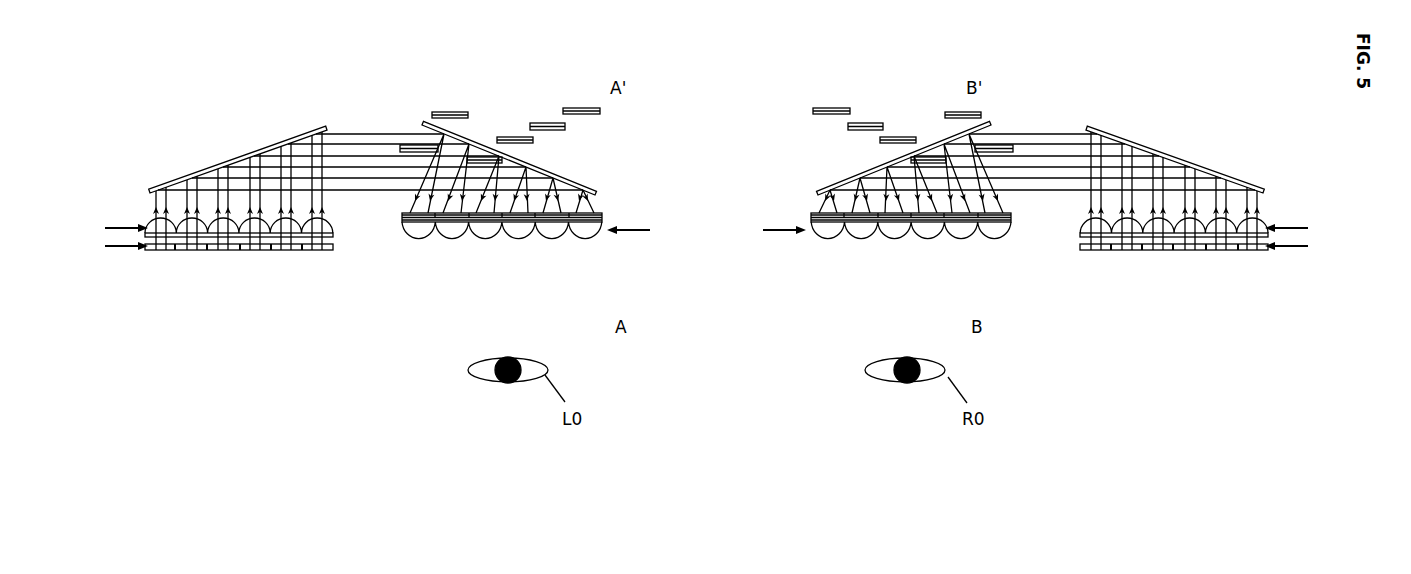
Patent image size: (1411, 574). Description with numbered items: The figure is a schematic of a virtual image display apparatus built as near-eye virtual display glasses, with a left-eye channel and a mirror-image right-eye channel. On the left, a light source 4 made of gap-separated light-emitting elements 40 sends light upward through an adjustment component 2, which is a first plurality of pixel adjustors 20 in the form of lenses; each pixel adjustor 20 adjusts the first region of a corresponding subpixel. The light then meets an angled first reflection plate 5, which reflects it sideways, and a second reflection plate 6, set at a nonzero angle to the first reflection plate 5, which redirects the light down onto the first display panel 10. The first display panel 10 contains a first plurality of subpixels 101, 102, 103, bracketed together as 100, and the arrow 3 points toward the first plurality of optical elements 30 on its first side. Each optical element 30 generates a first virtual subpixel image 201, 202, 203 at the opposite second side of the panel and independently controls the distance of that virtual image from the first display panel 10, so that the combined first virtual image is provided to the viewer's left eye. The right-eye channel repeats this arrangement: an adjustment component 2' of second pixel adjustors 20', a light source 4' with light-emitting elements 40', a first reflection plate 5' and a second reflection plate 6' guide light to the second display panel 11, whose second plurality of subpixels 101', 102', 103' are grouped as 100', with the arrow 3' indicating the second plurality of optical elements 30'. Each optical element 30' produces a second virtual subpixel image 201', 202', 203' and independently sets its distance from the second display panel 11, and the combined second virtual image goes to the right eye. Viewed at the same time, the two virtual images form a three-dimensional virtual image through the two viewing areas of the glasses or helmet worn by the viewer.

The first reflection plate 5 is at (238, 159).
The second reflection plate 6 is at (509, 158).
The first plurality of pixel adjustors 20 is at (225, 216).
The light-emitting elements 40 is at (233, 269).
The adjustment component 2 is at (121, 229).
The light source 4 is at (121, 247).
The light beam 3 is at (635, 229).
The first display panel 10 is at (605, 216).
The first plurality of optical elements 30 is at (525, 242).
The layer stack 100 is at (551, 181).
The first plurality of subpixels 101 is at (531, 178).
The first plurality of subpixels 102 is at (531, 190).
The first plurality of subpixels 103 is at (531, 202).
The first virtual subpixel image 201 is at (521, 109).
The first virtual subpixel image 202 is at (555, 97).
The first virtual subpixel image 203 is at (589, 79).
The first reflective mirror (right) 5' is at (1175, 159).
The second reflective mirror (right) 6' is at (904, 158).
The second plurality of pixel adjustors 20' is at (1194, 216).
The display panel (right) 40' is at (1187, 269).
The light beam (right) 2' is at (1297, 229).
The light beam (right) 4' is at (1297, 246).
The light beam (right) 3' is at (779, 229).
The second display panel 11 is at (893, 216).
The second plurality of optical elements 30' is at (889, 242).
The layer stack (right) 100' is at (865, 181).
The second plurality of subpixels 101' is at (885, 178).
The second plurality of subpixels 102' is at (885, 190).
The second plurality of subpixels 103' is at (885, 202).
The second virtual subpixel image 201' is at (893, 110).
The second virtual subpixel image 202' is at (861, 96).
The second virtual subpixel image 203' is at (826, 79).